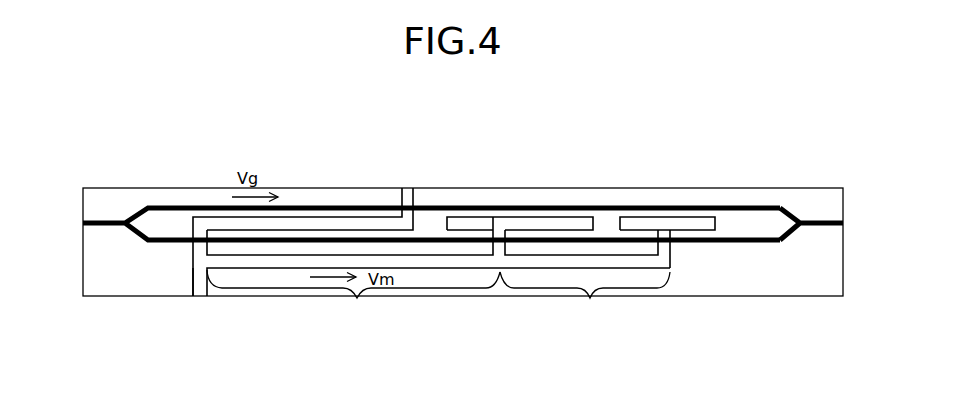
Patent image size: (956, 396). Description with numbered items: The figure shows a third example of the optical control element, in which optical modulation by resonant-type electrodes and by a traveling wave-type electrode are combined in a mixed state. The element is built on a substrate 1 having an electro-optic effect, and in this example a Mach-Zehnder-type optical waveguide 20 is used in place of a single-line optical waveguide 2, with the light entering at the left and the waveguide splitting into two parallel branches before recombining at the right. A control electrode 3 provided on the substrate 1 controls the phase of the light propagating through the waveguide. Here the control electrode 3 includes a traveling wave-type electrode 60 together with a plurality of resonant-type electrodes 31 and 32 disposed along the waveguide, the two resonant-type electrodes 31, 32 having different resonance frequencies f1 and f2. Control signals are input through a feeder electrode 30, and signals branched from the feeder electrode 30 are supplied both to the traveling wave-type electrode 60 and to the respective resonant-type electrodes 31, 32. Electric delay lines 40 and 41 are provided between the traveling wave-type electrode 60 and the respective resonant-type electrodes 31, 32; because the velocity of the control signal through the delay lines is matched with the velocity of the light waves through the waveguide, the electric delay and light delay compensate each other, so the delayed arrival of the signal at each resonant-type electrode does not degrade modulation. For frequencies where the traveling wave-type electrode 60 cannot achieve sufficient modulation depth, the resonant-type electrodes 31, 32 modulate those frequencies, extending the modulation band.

The substrate 1 is at (118, 282).
The optical waveguide 2 is at (112, 221).
The control electrode 3 is at (188, 264).
The Mach-Zehnder-type optical waveguide 20 is at (796, 199).
The feeder electrode 30 is at (200, 289).
The resonant-type electrode 31 is at (500, 222).
The resonant-type electrode 32 is at (663, 222).
The electric delay line 40 is at (357, 299).
The electric delay line 41 is at (590, 299).
The traveling wave-type electrode 60 is at (332, 224).